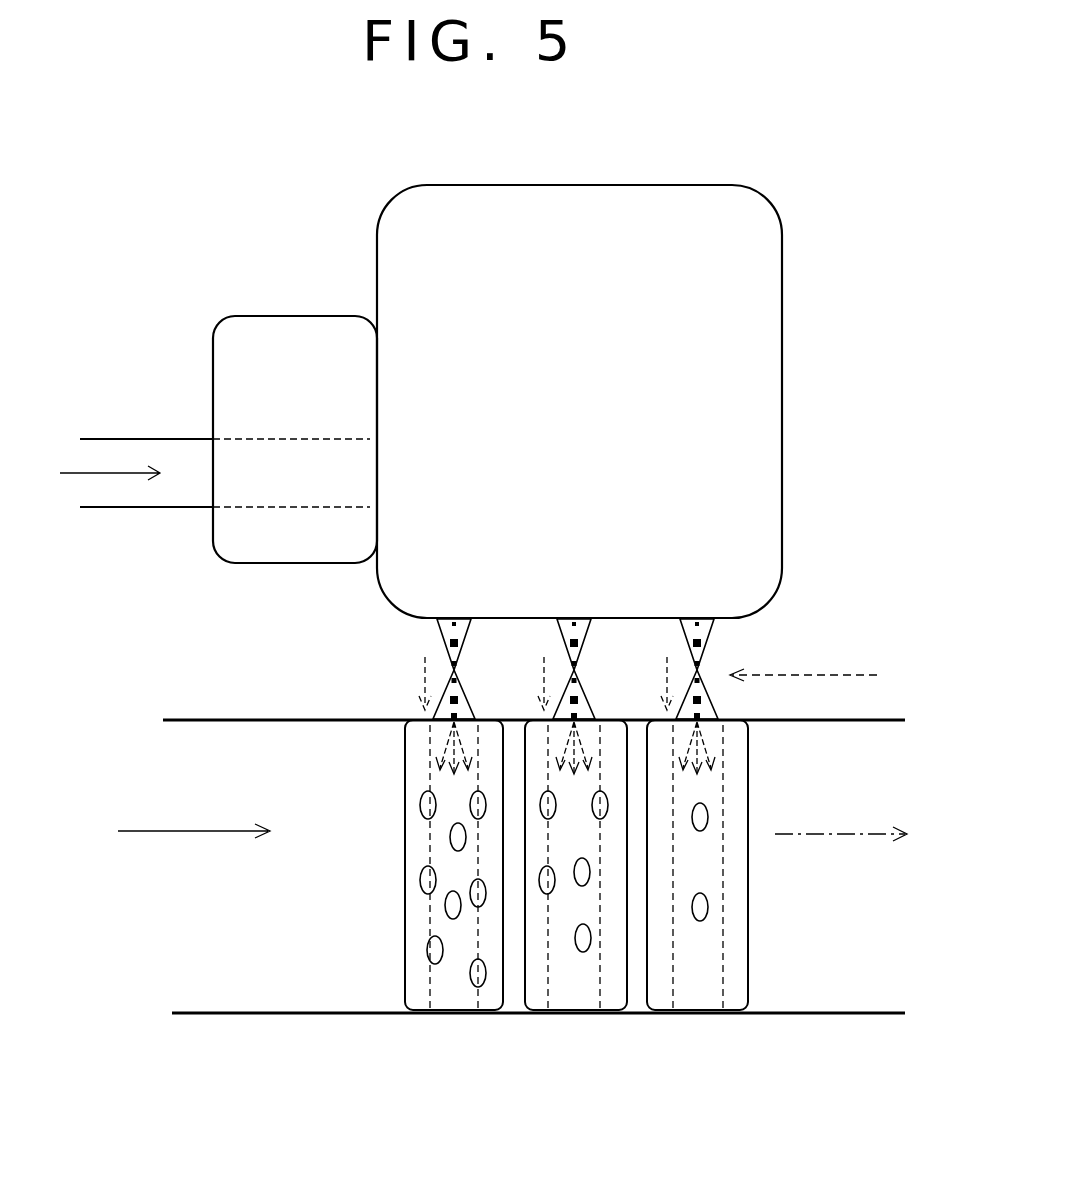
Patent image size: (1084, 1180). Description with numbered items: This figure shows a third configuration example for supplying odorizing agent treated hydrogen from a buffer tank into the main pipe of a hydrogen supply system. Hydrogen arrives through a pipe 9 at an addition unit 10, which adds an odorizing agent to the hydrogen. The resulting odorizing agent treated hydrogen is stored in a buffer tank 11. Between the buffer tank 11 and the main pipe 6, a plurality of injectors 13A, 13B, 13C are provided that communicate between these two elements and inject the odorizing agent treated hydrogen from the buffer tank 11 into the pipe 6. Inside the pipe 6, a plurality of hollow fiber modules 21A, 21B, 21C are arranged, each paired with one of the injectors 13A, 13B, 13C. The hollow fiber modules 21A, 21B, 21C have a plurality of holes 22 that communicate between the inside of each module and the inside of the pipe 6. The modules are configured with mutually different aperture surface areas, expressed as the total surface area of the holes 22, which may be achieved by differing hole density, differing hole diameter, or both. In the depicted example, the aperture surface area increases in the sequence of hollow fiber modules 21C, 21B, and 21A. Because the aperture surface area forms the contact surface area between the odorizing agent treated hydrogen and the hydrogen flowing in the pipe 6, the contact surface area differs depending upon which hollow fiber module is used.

The pipe 6 is at (245, 720).
The pipe 9 is at (140, 439).
The addition unit 10 is at (296, 316).
The buffer tank 11 is at (782, 396).
The injector 13A is at (437, 636).
The injector 13B is at (587, 650).
The injector 13C is at (715, 640).
The hollow fiber module 21A is at (424, 1000).
The hollow fiber module 21B is at (535, 1000).
The hollow fiber module 21C is at (665, 1000).
The holes 22 is at (420, 890).